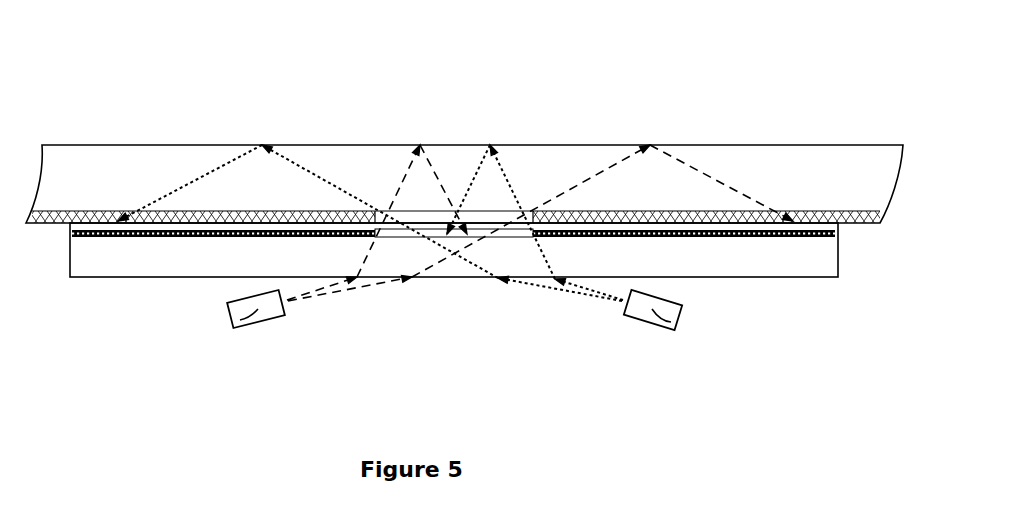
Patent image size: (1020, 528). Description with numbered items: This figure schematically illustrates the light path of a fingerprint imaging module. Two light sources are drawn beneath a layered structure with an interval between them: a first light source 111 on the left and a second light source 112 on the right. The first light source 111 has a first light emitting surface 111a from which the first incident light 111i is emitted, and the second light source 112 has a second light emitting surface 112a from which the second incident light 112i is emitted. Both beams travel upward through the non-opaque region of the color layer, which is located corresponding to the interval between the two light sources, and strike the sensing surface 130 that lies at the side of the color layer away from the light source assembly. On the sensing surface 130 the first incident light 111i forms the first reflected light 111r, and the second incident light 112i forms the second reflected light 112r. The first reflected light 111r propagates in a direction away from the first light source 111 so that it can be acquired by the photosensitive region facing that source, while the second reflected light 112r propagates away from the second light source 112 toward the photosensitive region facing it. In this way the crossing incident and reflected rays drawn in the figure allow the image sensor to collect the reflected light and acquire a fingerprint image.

The sensing surface 130 is at (776, 139).
The first light source 111 is at (232, 320).
The first light emitting surface 111a is at (289, 314).
The first incident light 111i is at (390, 158).
The first reflected light 111r is at (435, 158).
The second light source 112 is at (677, 322).
The second light emitting surface 112a is at (621, 314).
The second incident light 112i is at (300, 158).
The second reflected light 112r is at (213, 158).